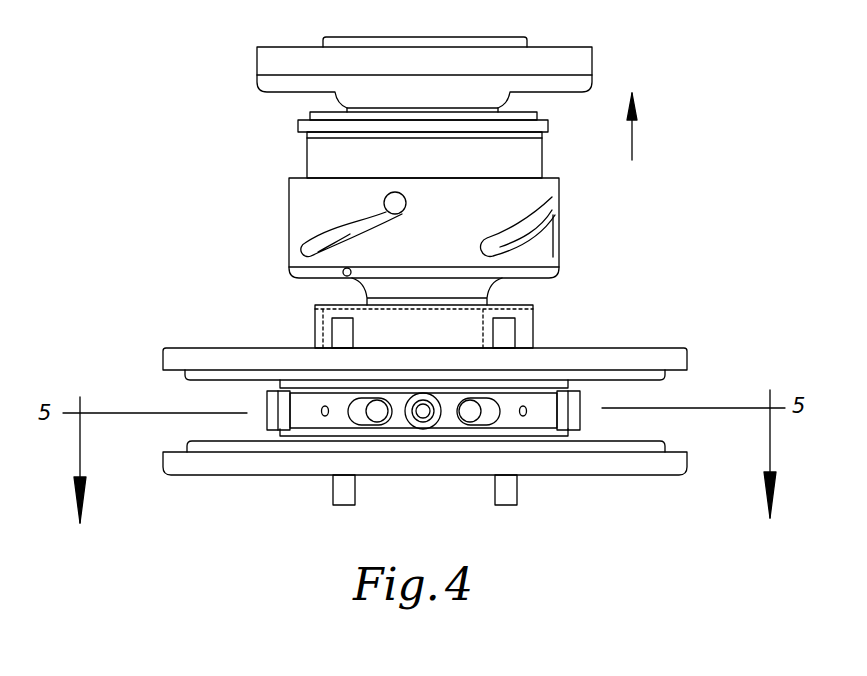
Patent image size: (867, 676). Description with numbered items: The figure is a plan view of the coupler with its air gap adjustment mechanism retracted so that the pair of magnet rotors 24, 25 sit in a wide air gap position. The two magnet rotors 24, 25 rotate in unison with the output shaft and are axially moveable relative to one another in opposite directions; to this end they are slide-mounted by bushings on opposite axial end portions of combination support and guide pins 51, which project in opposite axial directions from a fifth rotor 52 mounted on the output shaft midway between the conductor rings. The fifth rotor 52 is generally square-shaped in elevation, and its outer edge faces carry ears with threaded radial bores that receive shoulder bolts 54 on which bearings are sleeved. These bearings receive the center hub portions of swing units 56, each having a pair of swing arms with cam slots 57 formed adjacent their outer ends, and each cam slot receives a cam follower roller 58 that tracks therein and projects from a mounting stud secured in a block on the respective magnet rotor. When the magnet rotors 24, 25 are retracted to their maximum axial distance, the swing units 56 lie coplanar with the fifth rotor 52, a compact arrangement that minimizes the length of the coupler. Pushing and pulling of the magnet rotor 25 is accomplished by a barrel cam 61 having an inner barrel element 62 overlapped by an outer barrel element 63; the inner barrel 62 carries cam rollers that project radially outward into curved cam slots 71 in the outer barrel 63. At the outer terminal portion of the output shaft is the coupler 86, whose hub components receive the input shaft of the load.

The coupler 86 is at (248, 66).
The inner barrel element 62 is at (337, 157).
The barrel cam 61 is at (581, 230).
The curved cam slots 71 is at (348, 232).
The outer barrel element 63 is at (295, 262).
The magnet rotor 25 is at (652, 338).
The combination support and guide pins 51 is at (507, 332).
The fifth rotor 52 is at (545, 412).
The cam slots 57 is at (363, 413).
The shoulder bolts 54 is at (424, 422).
The swing units 56 is at (500, 420).
The cam follower roller 58 is at (472, 413).
The magnet rotor 24 is at (640, 487).